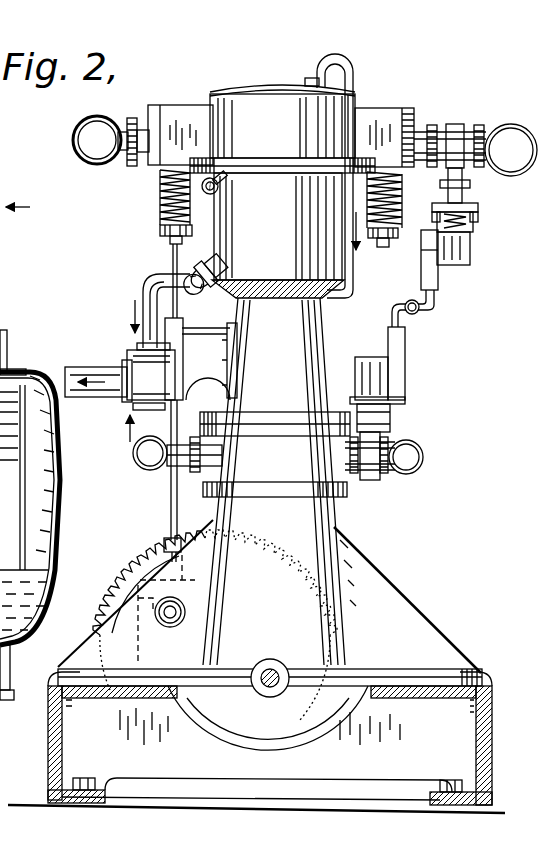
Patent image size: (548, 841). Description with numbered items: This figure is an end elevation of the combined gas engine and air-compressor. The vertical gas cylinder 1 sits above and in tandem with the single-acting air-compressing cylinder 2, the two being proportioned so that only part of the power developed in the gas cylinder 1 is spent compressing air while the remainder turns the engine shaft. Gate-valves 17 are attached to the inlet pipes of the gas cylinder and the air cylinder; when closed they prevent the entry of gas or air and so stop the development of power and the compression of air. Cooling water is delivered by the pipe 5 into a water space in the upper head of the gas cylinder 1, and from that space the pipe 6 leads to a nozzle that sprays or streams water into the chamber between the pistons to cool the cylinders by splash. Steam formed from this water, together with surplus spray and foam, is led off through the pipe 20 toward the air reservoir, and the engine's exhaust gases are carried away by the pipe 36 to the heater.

The gas cylinder 1 is at (282, 191).
The air-compressing cylinder 2 is at (269, 485).
The pipe 5 is at (213, 195).
The pipe 6 is at (355, 73).
The gate-valve 17 is at (451, 130).
The pipe 20 is at (196, 292).
The pipe 36 is at (93, 160).